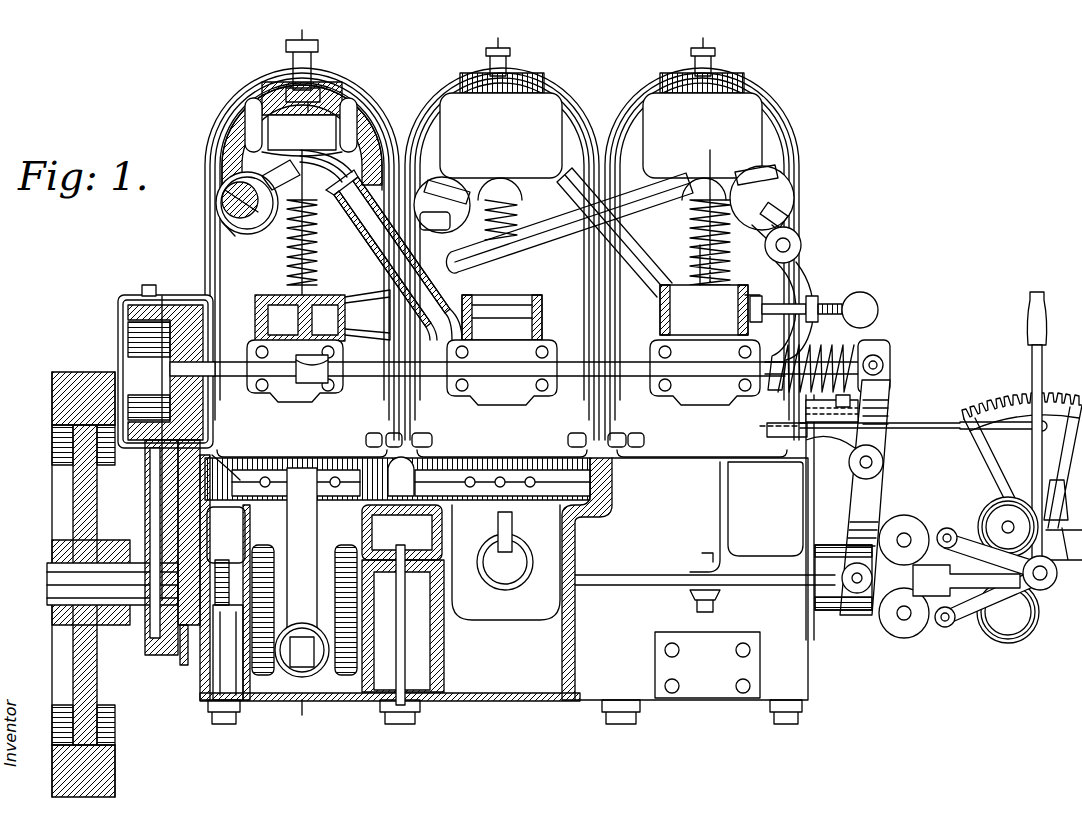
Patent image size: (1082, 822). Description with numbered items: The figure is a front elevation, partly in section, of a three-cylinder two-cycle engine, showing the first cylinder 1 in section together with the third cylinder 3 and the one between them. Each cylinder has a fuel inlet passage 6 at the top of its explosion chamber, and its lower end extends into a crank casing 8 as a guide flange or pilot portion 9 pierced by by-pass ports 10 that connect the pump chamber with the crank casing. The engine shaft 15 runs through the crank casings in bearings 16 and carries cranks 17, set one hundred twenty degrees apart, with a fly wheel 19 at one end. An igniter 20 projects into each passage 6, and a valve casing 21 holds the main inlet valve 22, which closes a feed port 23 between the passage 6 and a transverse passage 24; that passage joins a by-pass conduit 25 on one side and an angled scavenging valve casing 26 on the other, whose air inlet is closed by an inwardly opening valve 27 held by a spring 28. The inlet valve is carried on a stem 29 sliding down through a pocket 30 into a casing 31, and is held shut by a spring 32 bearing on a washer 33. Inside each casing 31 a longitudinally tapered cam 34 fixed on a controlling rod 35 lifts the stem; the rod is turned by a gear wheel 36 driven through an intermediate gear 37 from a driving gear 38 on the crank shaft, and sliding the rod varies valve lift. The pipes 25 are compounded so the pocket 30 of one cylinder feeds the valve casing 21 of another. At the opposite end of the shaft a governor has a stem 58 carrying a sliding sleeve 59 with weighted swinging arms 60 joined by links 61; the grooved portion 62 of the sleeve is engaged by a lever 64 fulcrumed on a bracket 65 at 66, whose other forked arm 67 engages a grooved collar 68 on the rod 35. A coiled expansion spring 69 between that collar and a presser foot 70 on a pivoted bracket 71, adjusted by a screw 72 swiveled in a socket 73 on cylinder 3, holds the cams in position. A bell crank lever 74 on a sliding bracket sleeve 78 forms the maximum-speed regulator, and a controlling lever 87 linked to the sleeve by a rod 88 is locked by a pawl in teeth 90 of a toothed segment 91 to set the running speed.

The cylinder 1 is at (212, 272).
The cylinder 3 is at (302, 43).
The fuel inlet port or passage 6 is at (302, 135).
The crank casing 8 is at (530, 700).
The guide flange or pilot portion 9 is at (450, 470).
The by-passes or ports 10 is at (300, 486).
The engine shaft 15 is at (350, 560).
The bearings 16 is at (408, 555).
The cranks 17 is at (505, 592).
The fly wheel 19 is at (55, 418).
The igniter 20 is at (318, 58).
The valve casing 21 is at (601, 136).
The main inlet valve 22 is at (268, 120).
The feed port 23 is at (262, 140).
The transverse passage 24 is at (368, 125).
The by-pass or conduit 25 is at (380, 238).
The scavenging valve casing 26 is at (218, 208).
The inwardly opening valve 27 is at (222, 222).
The spring 28 is at (222, 190).
The stem 29 is at (285, 242).
The chamber or pocket 30 is at (725, 292).
The casing 31 is at (503, 372).
The spring 32 is at (265, 282).
The washer 33 is at (262, 318).
The longitudinally tapered cam 34 is at (318, 385).
The controlling rod or shaft 35 is at (580, 372).
The gear wheel 36 is at (124, 346).
The intermediate gear 37 is at (235, 462).
The driving gear 38 is at (165, 660).
The stem 58 is at (930, 600).
The sliding sleeve 59 is at (904, 576).
The weighted outwardly swinging arms 60 is at (955, 520).
The links 61 is at (1042, 562).
The annularly grooved portion 62 is at (846, 612).
The lever 64 is at (862, 520).
The bracket 65 is at (806, 460).
The fulcrum 66 is at (884, 462).
The forked end or arm 67 is at (868, 408).
The annularly grooved collar 68 is at (890, 352).
The coiled expansion spring 69 is at (870, 342).
The presser foot 70 is at (770, 378).
The pivoted arm or bracket 71 is at (802, 250).
The screw 72 is at (860, 310).
The socket 73 is at (805, 292).
The elbow or bell crank lever 74 is at (828, 302).
The bracket sleeve 78 is at (812, 420).
The controlling lever 87 is at (1048, 378).
The rod 88 is at (945, 423).
The teeth 90 is at (982, 410).
The rack or toothed segment 91 is at (1081, 438).